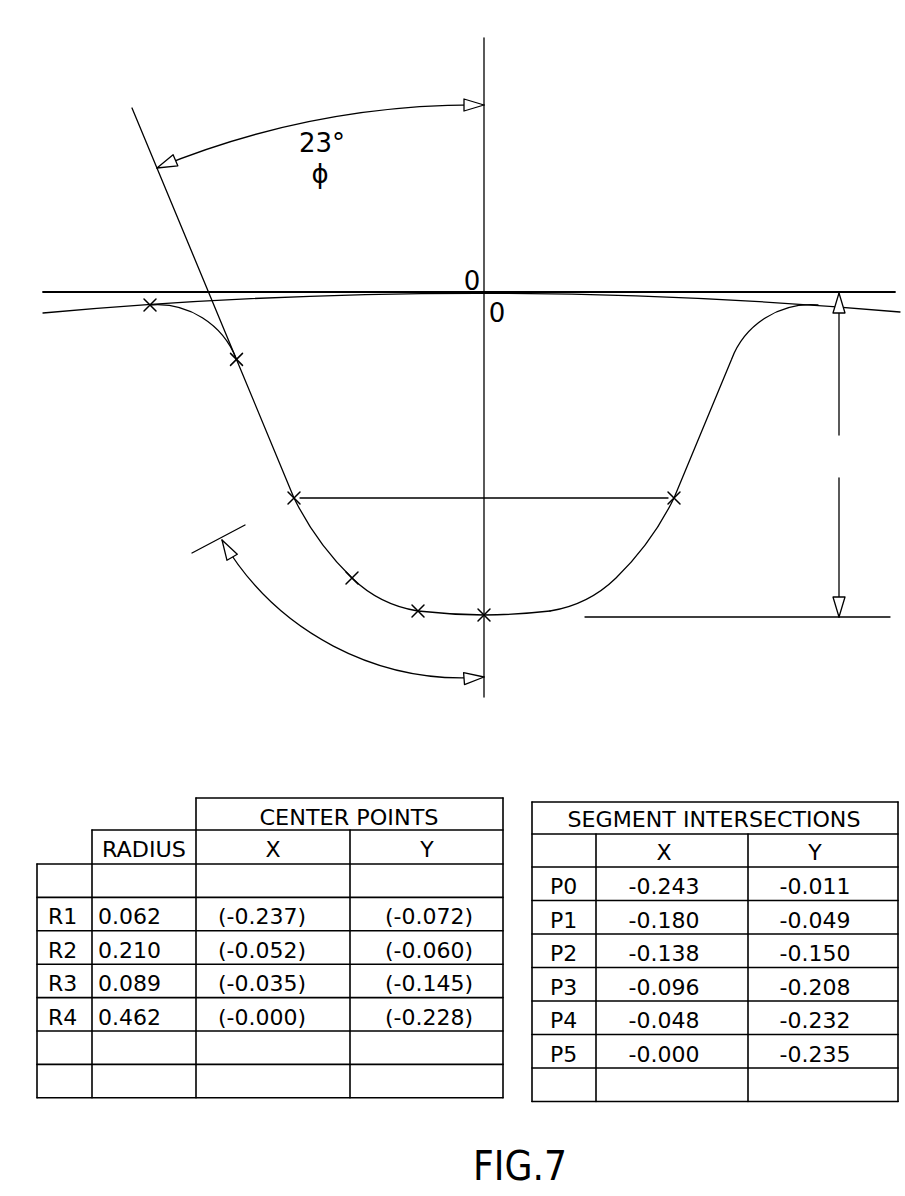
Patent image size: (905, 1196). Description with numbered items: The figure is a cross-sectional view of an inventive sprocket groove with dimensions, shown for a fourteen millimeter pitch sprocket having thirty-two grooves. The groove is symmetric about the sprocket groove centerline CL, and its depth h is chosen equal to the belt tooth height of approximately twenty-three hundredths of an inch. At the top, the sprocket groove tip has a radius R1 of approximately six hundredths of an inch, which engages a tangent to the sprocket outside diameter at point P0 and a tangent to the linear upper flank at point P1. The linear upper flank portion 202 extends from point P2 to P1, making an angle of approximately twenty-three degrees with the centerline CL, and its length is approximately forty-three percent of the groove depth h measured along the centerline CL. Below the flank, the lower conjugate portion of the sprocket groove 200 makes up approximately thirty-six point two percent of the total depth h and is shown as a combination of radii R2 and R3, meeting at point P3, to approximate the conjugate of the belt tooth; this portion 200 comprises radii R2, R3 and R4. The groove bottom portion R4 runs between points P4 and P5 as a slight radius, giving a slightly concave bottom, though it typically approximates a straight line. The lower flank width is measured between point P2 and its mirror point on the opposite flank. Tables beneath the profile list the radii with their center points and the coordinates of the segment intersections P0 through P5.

The lower conjugate portion of the sprocket groove 200 is at (447, 494).
The linear upper flank portion 202 is at (262, 424).
The sprocket groove tip radius R1 is at (202, 317).
The second radius R2 is at (316, 528).
The third radius R3 is at (382, 597).
The groove bottom portion radius R4 is at (462, 612).
The tangent point on sprocket outside diameter P0 is at (147, 320).
The tangent point to upper flank P1 is at (256, 350).
The lower end point of upper flank P2 is at (485, 500).
The segment intersection point P3 is at (334, 590).
The groove bottom segment start point P4 is at (418, 628).
The groove bottom center point P5 is at (500, 630).
The sprocket groove depth h is at (737, 455).
The sprocket groove centerline CL is at (481, 355).